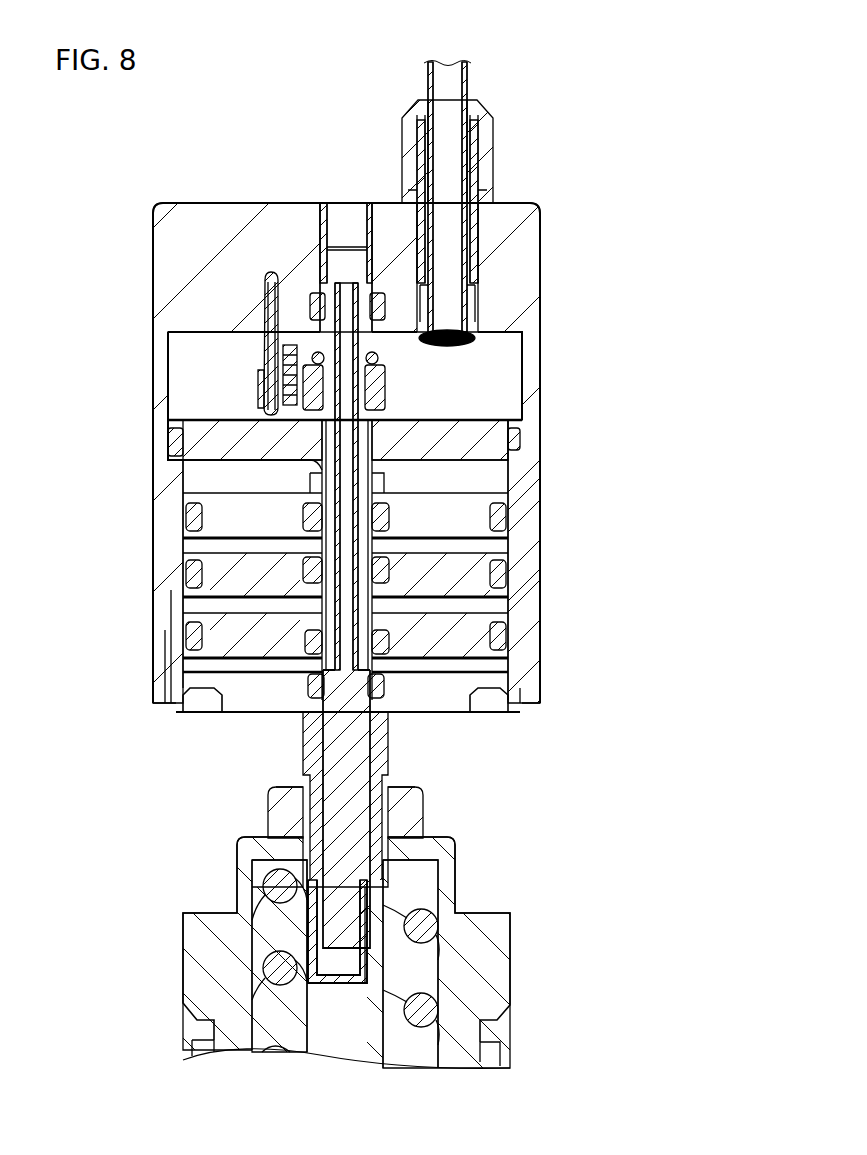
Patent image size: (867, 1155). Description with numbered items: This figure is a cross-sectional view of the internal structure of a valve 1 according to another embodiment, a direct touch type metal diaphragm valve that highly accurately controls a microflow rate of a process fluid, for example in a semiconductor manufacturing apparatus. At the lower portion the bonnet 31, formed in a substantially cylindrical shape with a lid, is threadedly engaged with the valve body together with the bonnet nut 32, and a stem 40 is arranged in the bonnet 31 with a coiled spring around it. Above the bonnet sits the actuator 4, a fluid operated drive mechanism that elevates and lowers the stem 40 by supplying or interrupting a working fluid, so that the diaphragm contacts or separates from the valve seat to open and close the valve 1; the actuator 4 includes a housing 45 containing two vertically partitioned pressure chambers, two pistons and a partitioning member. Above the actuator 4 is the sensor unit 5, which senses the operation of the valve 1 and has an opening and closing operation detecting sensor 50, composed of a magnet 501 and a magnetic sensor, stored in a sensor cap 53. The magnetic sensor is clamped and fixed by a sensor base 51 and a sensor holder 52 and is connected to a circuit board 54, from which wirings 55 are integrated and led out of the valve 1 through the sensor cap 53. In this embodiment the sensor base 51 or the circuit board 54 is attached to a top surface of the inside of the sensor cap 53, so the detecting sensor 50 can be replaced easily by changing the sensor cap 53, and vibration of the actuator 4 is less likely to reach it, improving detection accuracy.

The valve 1 is at (164, 172).
The actuator 4 is at (542, 521).
The sensor unit 5 is at (543, 320).
The bonnet 31 is at (510, 935).
The bonnet nut 32 is at (438, 810).
The stem 40 is at (385, 468).
The housing 45 is at (538, 578).
The opening and closing operation detecting sensor 50 is at (256, 350).
The sensor base 51 is at (255, 372).
The sensor holder 52 is at (237, 457).
The sensor cap 53 is at (543, 250).
The circuit board 54 is at (300, 330).
The wirings 55 is at (445, 340).
The magnet 501 is at (385, 385).